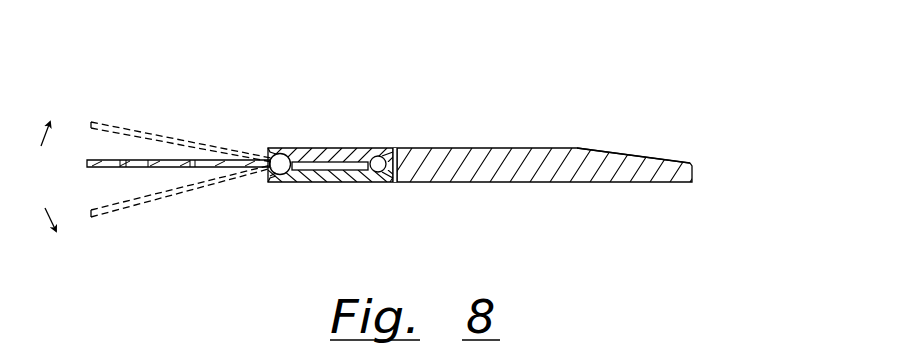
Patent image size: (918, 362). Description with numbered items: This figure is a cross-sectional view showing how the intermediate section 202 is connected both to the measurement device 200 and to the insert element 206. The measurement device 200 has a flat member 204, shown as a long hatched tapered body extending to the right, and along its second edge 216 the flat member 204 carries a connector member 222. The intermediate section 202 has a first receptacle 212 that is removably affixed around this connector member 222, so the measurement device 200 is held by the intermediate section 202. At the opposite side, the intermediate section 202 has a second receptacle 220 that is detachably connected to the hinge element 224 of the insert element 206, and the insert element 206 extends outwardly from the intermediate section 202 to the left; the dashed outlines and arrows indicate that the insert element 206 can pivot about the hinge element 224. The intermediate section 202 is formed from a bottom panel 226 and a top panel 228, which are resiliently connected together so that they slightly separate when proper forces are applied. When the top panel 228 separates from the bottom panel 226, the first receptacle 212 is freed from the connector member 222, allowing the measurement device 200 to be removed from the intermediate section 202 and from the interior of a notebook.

The measurement device 200 is at (713, 28).
The intermediate section 202 is at (355, 147).
The flat member 204 is at (520, 147).
The insert element 206 is at (110, 170).
The first receptacle 212 is at (383, 182).
The second edge 216 is at (390, 182).
The second receptacle 220 is at (280, 182).
The connector member 222 is at (383, 147).
The hinge element 224 is at (280, 147).
The bottom panel 226 is at (340, 182).
The top panel 228 is at (328, 147).